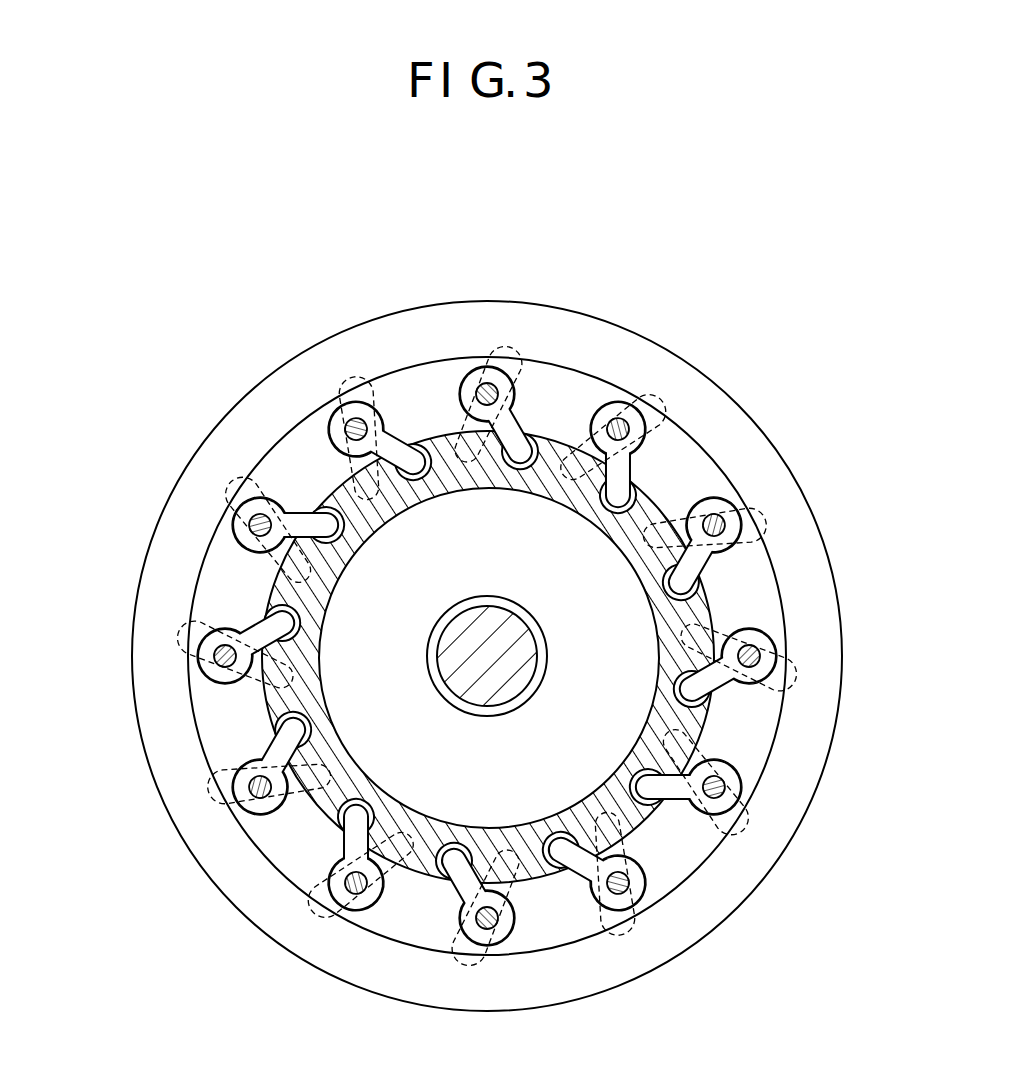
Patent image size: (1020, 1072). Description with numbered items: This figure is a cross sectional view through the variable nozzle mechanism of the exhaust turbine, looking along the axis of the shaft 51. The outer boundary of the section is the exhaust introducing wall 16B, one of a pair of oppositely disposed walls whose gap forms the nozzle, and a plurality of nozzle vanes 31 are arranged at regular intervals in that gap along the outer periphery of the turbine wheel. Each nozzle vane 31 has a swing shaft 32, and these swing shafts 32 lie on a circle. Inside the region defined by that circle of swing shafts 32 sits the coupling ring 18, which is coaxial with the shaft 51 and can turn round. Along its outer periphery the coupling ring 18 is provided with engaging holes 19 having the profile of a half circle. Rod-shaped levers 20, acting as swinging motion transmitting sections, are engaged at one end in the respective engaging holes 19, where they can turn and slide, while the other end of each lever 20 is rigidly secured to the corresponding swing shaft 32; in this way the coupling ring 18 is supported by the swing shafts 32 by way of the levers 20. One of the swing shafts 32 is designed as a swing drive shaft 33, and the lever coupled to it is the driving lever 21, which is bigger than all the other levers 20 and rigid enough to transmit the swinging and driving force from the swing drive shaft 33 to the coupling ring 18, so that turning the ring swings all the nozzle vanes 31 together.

The exhaust introducing wall 16B is at (207, 707).
The coupling ring 18 is at (650, 510).
The engaging hole 19 is at (640, 810).
The rod-shaped lever 20 is at (562, 866).
The driving lever 21 is at (512, 430).
The nozzle vane 31 is at (420, 937).
The swing shaft 32 is at (630, 877).
The swing drive shaft 33 is at (488, 387).
The shaft 51 is at (522, 678).